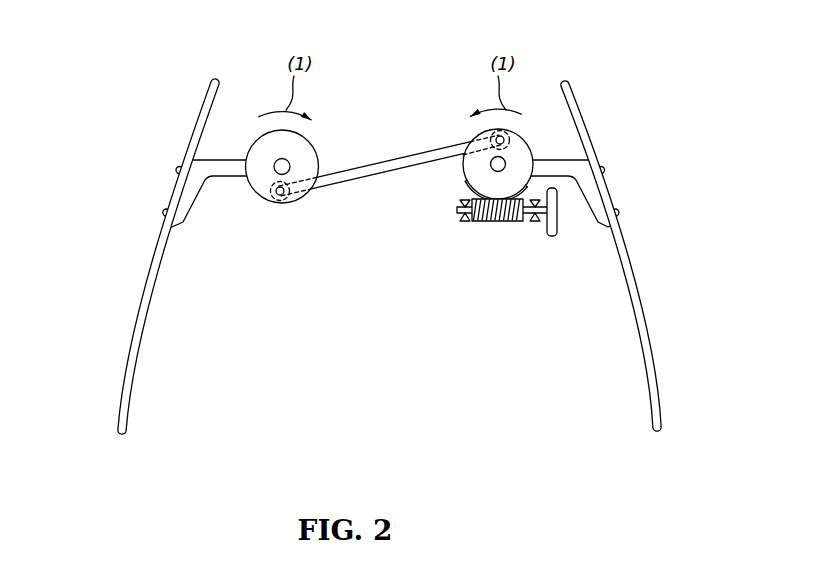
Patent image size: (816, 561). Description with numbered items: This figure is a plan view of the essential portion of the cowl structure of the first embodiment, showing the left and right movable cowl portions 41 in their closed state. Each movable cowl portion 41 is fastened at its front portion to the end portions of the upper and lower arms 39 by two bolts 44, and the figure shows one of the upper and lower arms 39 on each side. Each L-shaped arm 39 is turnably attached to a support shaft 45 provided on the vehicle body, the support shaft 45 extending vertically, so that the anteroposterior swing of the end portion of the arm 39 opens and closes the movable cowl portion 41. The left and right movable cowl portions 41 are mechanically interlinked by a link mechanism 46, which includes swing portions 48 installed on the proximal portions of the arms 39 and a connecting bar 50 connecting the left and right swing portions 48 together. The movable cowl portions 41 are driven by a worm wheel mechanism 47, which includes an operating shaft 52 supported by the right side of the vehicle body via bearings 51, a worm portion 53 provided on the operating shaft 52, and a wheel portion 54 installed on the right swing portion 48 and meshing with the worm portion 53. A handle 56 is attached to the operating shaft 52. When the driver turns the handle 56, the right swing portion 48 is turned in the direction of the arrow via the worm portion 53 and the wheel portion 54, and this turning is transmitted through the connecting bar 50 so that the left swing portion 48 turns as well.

The arm 39 is at (212, 178).
The movable cowl portion 41 is at (142, 295).
The bolt 44 is at (164, 210).
The support shaft 45 is at (274, 165).
The link mechanism 46 is at (392, 152).
The worm wheel mechanism 47 is at (511, 233).
The swing portion 48 is at (259, 136).
The connecting bar 50 is at (365, 180).
The bearing 51 is at (464, 222).
The operating shaft 52 is at (456, 210).
The worm portion 53 is at (492, 222).
The wheel portion 54 is at (468, 188).
The handle 56 is at (552, 237).